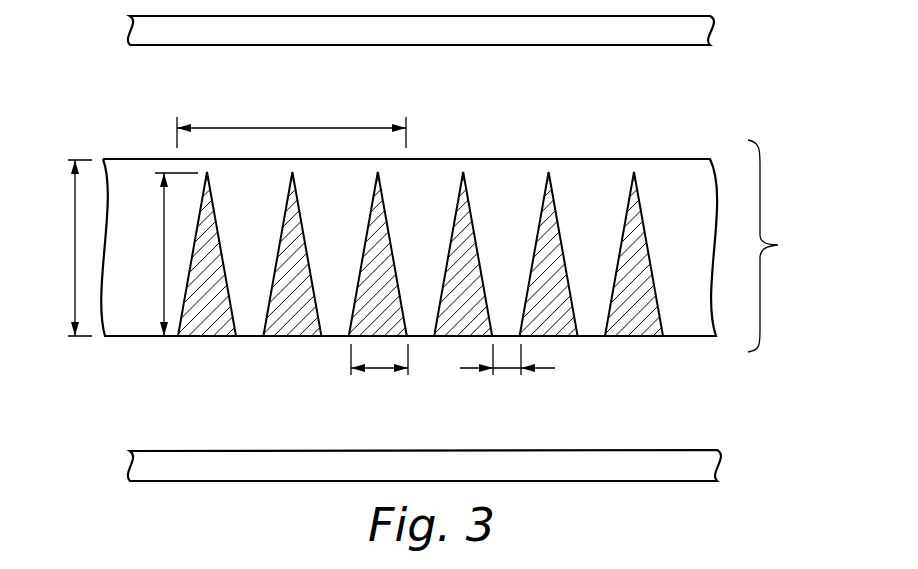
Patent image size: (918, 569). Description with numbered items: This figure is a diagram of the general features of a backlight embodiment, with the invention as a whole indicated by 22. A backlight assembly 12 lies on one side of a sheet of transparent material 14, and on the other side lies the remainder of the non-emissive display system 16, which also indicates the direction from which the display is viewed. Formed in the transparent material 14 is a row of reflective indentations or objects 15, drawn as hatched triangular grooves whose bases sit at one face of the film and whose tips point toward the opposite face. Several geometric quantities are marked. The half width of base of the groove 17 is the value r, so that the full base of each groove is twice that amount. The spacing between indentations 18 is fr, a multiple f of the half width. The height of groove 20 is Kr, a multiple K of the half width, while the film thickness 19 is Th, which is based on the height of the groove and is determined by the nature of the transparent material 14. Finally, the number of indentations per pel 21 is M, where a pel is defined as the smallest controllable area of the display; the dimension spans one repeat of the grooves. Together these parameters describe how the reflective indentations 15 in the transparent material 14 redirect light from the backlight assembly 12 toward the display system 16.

The backlight assembly 12 is at (453, 45).
The transparent material 14 is at (680, 192).
The reflective indentations or objects 15 is at (560, 222).
The remainder of the non-emissive display system 16 is at (215, 451).
The half width of base of the groove 17 is at (380, 368).
The spacing between indentations 18 is at (507, 368).
The film thickness 19 is at (75, 248).
The height of groove 20 is at (164, 256).
The number of indentations per pel 21 is at (292, 128).
The invention as a whole 22 is at (782, 246).